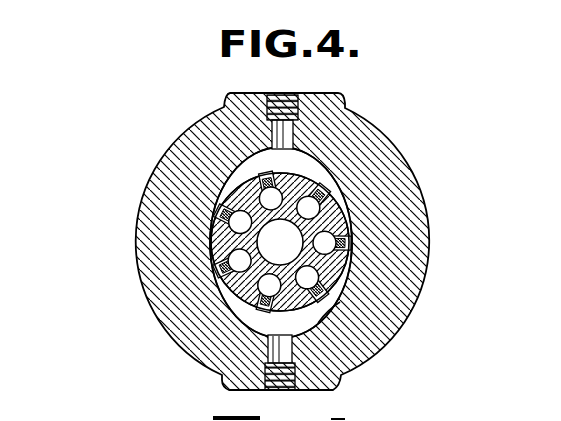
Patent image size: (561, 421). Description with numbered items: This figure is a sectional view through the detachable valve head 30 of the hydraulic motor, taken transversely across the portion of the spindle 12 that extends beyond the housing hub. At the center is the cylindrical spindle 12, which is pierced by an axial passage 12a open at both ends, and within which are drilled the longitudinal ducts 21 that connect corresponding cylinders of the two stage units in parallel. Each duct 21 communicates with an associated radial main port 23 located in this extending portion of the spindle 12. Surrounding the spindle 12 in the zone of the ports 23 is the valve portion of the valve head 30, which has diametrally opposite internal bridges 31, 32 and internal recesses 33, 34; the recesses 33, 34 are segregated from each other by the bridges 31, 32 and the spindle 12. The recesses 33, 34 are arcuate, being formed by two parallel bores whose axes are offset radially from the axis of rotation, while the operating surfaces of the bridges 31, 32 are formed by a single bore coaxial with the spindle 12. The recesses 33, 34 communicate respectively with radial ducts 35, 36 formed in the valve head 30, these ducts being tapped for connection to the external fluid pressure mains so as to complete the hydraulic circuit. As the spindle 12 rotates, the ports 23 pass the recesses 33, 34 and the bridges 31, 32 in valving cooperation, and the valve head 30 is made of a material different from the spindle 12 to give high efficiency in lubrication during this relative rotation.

The valve head 30 is at (350, 120).
The internal recess 34 is at (297, 157).
The radial duct 36 is at (286, 129).
The radial duct 35 is at (288, 351).
The spindle 12 is at (313, 178).
The axial passage 12a is at (280, 242).
The longitudinal duct 21 is at (282, 242).
The radial main port 23 is at (263, 177).
The internal bridge 32 is at (208, 238).
The internal bridge 31 is at (357, 247).
The internal recess 33 is at (331, 303).